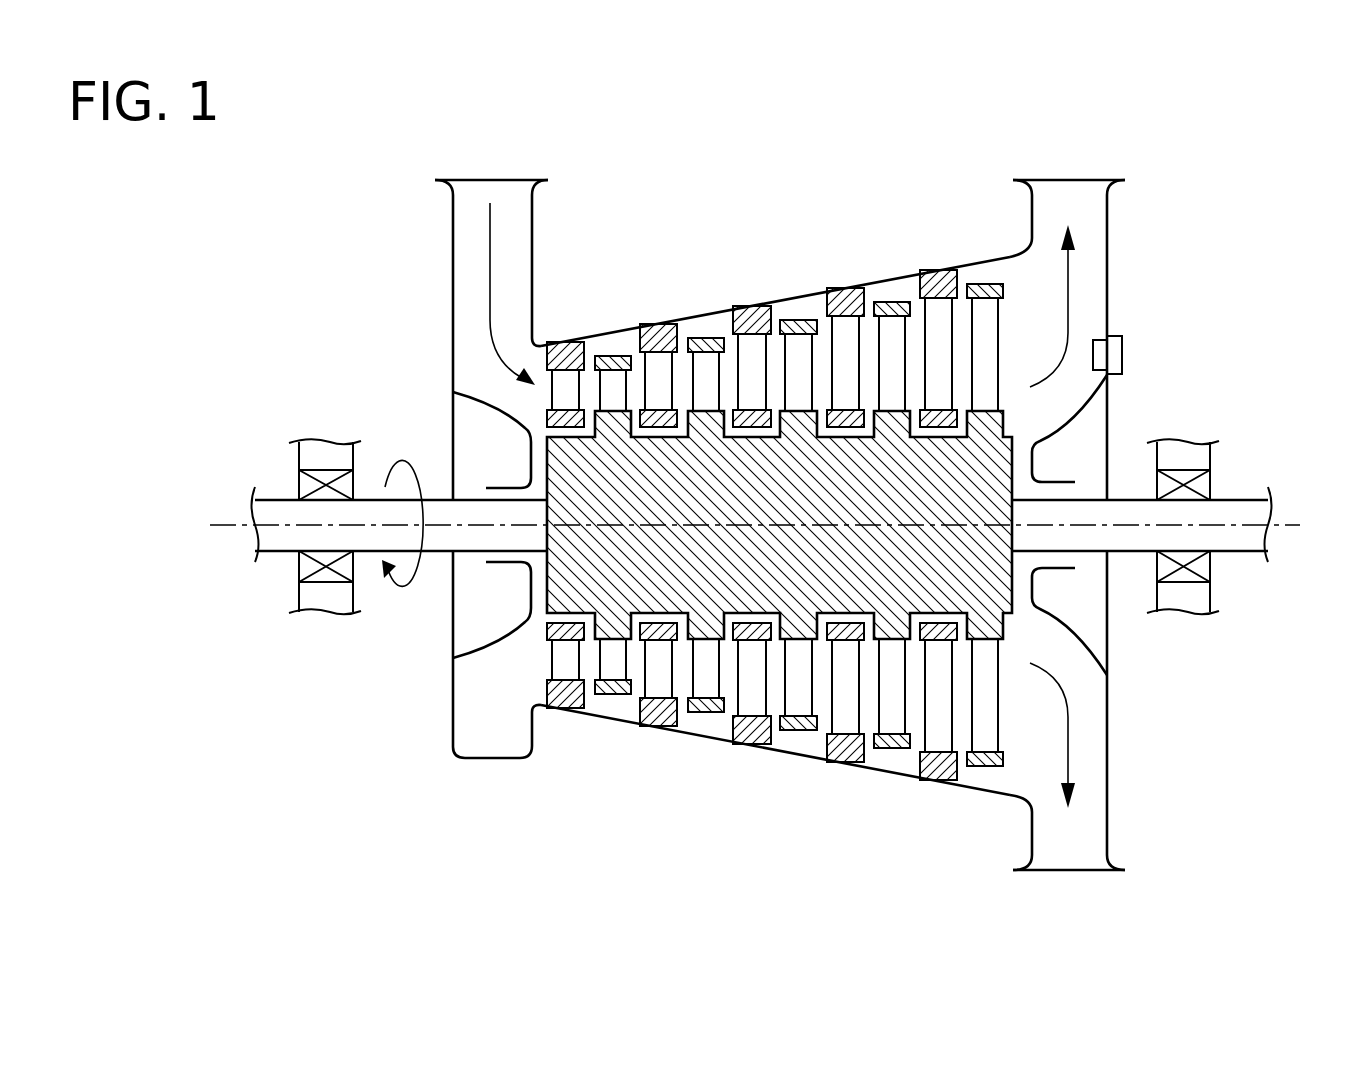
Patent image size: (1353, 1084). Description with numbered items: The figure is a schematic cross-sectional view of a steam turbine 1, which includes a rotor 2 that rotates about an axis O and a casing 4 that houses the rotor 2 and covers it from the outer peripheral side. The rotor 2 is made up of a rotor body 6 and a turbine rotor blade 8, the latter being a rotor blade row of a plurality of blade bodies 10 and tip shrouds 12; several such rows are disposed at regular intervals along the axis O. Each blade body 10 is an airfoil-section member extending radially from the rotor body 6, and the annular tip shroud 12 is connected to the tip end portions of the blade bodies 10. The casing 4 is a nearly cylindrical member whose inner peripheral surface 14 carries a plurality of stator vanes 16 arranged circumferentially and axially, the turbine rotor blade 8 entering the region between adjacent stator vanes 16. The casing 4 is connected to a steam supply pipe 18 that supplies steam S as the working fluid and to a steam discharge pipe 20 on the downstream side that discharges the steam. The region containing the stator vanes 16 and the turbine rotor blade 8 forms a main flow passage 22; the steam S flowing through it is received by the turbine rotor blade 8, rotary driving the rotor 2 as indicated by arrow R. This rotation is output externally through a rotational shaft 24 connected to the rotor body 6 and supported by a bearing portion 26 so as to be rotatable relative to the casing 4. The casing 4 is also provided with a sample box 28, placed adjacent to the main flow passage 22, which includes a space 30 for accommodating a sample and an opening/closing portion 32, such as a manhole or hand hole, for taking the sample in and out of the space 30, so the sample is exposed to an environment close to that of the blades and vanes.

The steam turbine 1 is at (762, 537).
The rotor 2 is at (647, 600).
The casing 4 is at (485, 760).
The rotor body 6 is at (799, 515).
The turbine rotor blade 8 is at (752, 467).
The blade body 10 is at (707, 380).
The tip shroud 12 is at (705, 345).
The inner peripheral surface 14 is at (900, 276).
The stator vane 16 is at (753, 365).
The steam supply pipe 18 is at (532, 246).
The steam discharge pipe 20 is at (1107, 270).
The main flow passage 22 is at (583, 397).
The rotational shaft 24 is at (440, 552).
The bearing portion 26 is at (325, 628).
The sample box 28 is at (1146, 378).
The space 30 is at (1093, 361).
The opening/closing portion 32 is at (1122, 355).
The steam S is at (490, 283).
The arrow R is at (403, 588).
The axis O is at (770, 525).